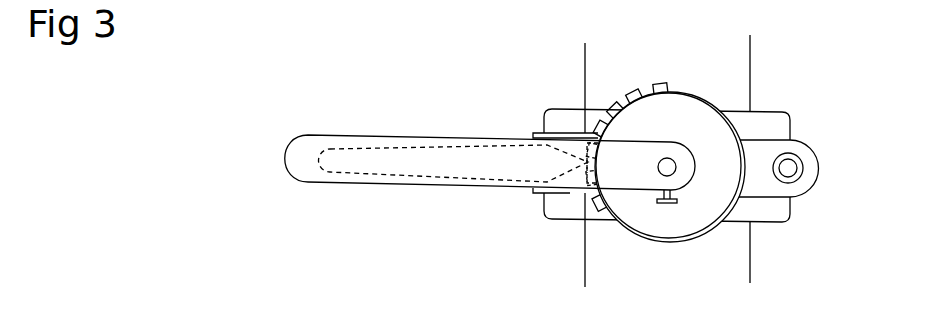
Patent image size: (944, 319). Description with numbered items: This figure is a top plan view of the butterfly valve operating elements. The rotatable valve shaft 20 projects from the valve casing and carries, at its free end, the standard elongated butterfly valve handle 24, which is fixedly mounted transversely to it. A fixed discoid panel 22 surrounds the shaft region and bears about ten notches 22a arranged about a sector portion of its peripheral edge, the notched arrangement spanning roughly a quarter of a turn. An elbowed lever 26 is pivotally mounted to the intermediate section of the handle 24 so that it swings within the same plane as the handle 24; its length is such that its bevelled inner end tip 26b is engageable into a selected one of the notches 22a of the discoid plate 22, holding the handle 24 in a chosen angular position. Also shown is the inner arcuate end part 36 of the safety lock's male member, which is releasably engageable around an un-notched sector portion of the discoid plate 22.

The valve shaft 20 is at (673, 168).
The discoid panel 22 is at (637, 133).
The notches 22a is at (688, 133).
The butterfly valve handle 24 is at (302, 157).
The elbowed lever 26 is at (422, 164).
The bevelled inner end tip 26b is at (588, 163).
The inner arcuate end part 36 is at (800, 145).